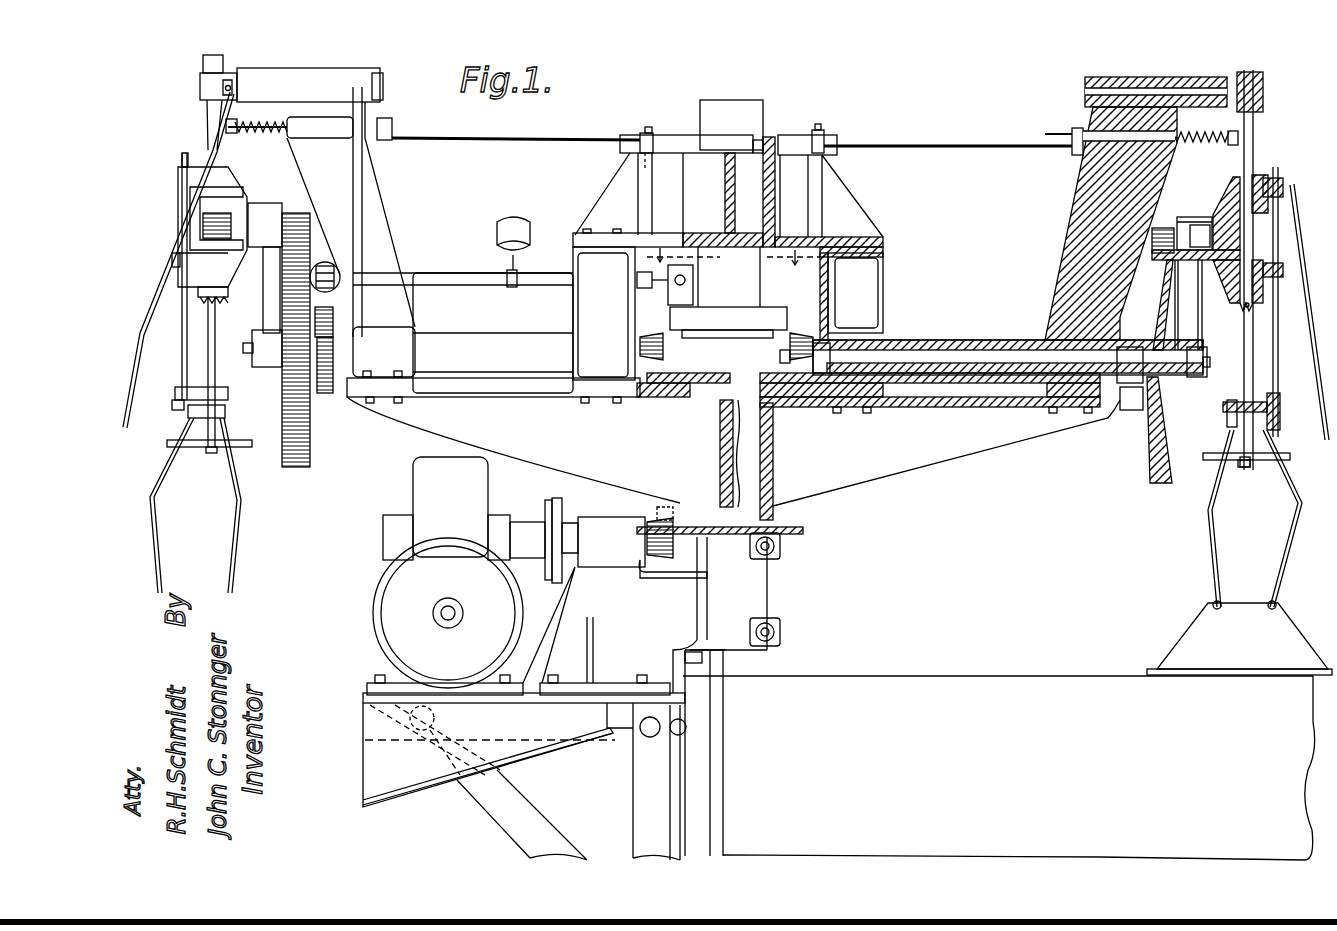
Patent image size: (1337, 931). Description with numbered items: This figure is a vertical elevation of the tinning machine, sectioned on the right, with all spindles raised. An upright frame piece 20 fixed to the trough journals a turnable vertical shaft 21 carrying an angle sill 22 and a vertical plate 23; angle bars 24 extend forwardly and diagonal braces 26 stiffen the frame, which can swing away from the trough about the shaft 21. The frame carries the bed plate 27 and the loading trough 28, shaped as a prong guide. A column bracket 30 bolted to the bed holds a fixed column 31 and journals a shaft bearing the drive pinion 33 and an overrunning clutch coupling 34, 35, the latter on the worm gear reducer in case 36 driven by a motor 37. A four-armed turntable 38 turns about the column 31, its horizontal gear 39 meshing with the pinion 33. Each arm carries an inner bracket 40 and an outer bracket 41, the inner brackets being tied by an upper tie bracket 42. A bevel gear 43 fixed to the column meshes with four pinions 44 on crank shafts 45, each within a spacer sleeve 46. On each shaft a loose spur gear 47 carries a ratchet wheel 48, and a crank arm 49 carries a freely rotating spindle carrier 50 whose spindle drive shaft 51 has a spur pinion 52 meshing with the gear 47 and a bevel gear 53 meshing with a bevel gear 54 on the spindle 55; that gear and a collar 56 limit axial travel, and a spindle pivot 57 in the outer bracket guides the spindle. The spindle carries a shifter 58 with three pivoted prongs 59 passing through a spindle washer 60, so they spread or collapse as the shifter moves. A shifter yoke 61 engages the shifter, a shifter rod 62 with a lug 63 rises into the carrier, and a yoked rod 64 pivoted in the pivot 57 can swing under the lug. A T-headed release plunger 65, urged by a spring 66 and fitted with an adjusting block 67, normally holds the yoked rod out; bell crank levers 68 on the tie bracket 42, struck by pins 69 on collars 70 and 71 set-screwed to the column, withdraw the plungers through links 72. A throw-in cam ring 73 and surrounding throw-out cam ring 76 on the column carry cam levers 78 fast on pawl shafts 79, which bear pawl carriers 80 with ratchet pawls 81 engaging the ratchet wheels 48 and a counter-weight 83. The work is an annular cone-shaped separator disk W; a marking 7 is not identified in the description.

The chute passage / arrow 7 is at (672, 218).
The upright frame piece 20 is at (725, 705).
The turnable vertical shaft 21 is at (935, 676).
The upper angle sill 22 is at (632, 715).
The vertically disposed plate 23 is at (682, 815).
The spaced angle bars 24 is at (612, 743).
The diagonal braces 26 is at (488, 803).
The bed plate 27 is at (363, 695).
The loading trough 28 is at (402, 805).
The column bracket 30 is at (765, 594).
The upright column 31 is at (720, 100).
The drive pinion 33 is at (663, 567).
The overrunning clutch coupling 34 is at (555, 498).
The overrunning clutch coupling member 35 is at (540, 505).
The reducer case 36 is at (413, 480).
The motor 37 is at (373, 624).
The four-armed turntable 38 is at (968, 452).
The horizontal gear 39 is at (790, 530).
The inner upright bracket 40 is at (575, 305).
The outer upright bracket 41 is at (1078, 228).
The upper tie bracket 42 is at (628, 180).
The horizontal bevel gear 43 is at (720, 467).
The pinions 44 is at (378, 172).
The crank shafts 45 is at (670, 383).
The spacer sleeve 46 is at (450, 340).
The spur gear 47 is at (292, 468).
The ratchet wheel 48 is at (325, 395).
The crank arm 49 is at (263, 272).
The spindle carrier 50 is at (240, 205).
The spindle drive shaft 51 is at (1163, 227).
The spur pinion 52 is at (297, 213).
The bevel gear 53 is at (655, 562).
The complementary bevel gear 54 is at (190, 230).
The spindle 55 is at (200, 210).
The collar 56 is at (210, 335).
The spindle pivot 57 is at (200, 90).
The shifter 58 is at (226, 411).
The prongs 59 is at (237, 535).
The spindle washer 60 is at (190, 452).
The shifter yoke 61 is at (228, 393).
The shifter rod 62 is at (183, 312).
The lug 63 is at (205, 230).
The yoked rod 64 is at (135, 400).
The release plunger 65 is at (207, 125).
The spring 66 is at (262, 128).
The adjusting block 67 is at (1076, 128).
The bell crank levers 68 is at (640, 136).
The spaced pins 69 is at (690, 137).
The collar 70 is at (770, 137).
The collar 71 is at (788, 135).
The links 72 is at (485, 140).
The inner cam ring 73 is at (750, 335).
The throw-out cam ring 76 is at (765, 272).
The cam levers 78 is at (693, 285).
The pawl shafts 79 is at (443, 280).
The pawl carriers 80 is at (343, 277).
The ratchet pawls 81 is at (340, 265).
The counter-weight 83 is at (525, 230).
The cone-shaped disk W is at (1190, 640).